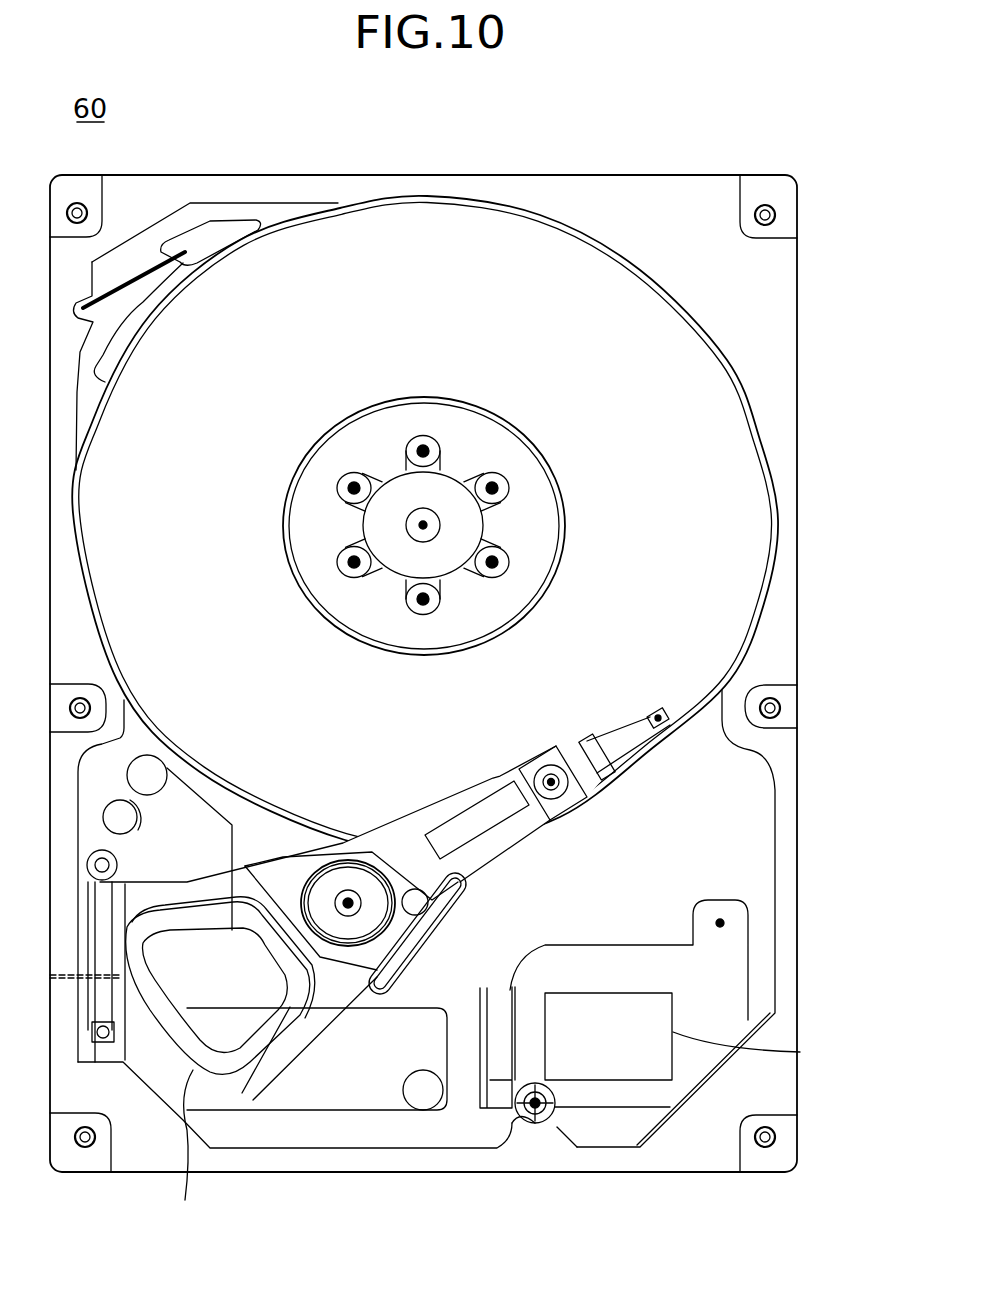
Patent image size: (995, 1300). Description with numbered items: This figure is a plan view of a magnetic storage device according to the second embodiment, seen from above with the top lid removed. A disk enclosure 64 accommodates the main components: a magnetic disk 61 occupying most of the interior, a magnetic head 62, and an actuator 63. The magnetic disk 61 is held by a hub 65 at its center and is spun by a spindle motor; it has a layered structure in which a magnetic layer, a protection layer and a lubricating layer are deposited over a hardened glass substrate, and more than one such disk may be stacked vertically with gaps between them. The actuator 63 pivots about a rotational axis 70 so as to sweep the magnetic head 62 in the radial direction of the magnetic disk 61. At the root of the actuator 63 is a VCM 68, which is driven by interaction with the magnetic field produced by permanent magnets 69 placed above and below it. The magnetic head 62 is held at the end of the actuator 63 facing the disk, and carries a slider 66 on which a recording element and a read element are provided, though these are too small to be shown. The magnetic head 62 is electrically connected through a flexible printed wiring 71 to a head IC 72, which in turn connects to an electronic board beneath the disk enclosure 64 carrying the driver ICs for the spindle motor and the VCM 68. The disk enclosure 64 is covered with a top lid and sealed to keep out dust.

The magnetic disk 61 is at (543, 265).
The magnetic head 62 is at (618, 692).
The actuator 63 is at (392, 797).
The disk enclosure 64 is at (799, 396).
The hub 65 is at (497, 440).
The slider 66 is at (658, 708).
The VCM 68 is at (190, 1065).
The permanent magnets 69 is at (345, 1112).
The rotational axis 70 is at (345, 880).
The flexible printed wiring 71 is at (487, 988).
The head IC (HDIC) 72 is at (672, 1030).